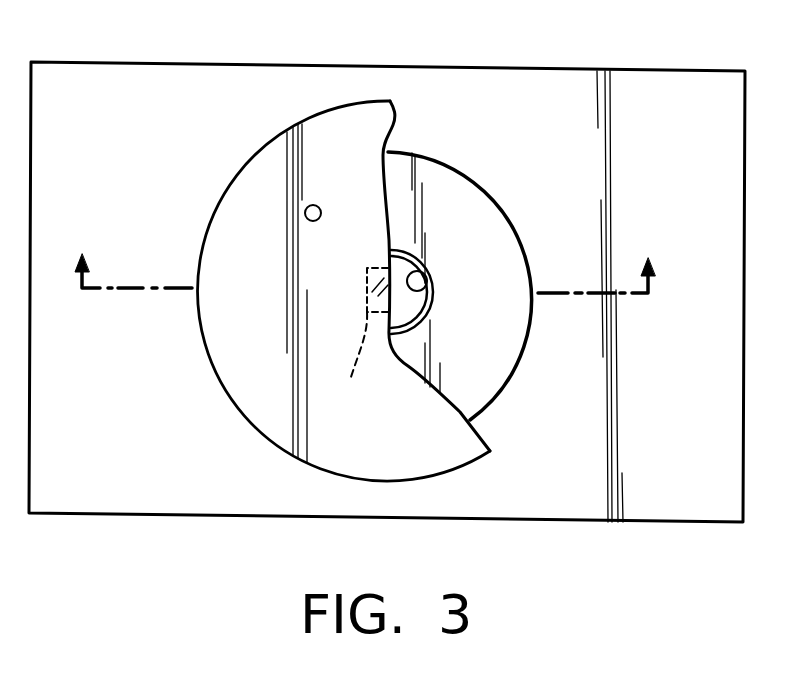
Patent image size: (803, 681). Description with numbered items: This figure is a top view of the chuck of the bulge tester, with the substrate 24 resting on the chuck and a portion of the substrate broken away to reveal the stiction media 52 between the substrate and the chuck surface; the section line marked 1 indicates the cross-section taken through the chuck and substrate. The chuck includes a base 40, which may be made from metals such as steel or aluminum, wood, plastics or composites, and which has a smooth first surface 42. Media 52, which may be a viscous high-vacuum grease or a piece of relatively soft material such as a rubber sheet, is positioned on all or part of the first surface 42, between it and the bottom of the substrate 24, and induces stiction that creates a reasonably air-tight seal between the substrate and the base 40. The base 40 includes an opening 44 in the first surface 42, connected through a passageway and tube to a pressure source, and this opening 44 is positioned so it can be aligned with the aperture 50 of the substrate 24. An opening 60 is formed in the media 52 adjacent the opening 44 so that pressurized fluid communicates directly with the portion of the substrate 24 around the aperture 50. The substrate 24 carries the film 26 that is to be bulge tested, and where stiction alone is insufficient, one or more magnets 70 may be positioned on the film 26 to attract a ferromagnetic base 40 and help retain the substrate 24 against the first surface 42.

The base 40 is at (413, 66).
The substrate 24 is at (298, 124).
The film 26 is at (372, 220).
The first surface 42 is at (565, 137).
The opening 44 is at (427, 287).
The aperture 50 is at (350, 388).
The media 52 is at (486, 361).
The opening 60 is at (433, 308).
The magnets 70 is at (305, 213).
The section line 1 is at (365, 261).